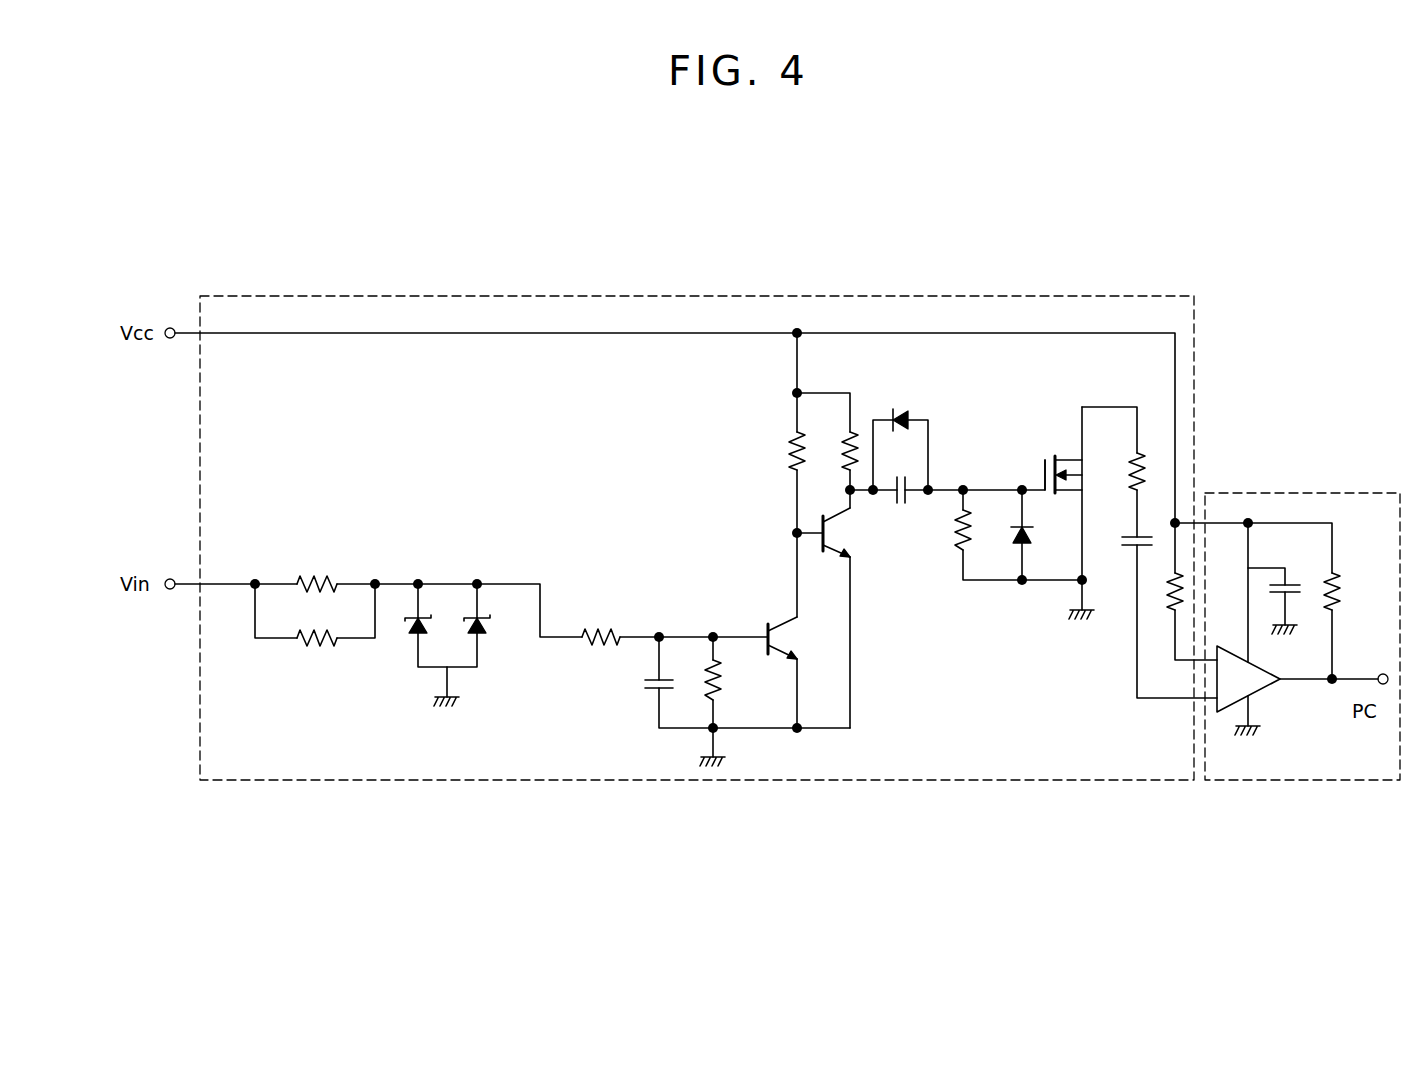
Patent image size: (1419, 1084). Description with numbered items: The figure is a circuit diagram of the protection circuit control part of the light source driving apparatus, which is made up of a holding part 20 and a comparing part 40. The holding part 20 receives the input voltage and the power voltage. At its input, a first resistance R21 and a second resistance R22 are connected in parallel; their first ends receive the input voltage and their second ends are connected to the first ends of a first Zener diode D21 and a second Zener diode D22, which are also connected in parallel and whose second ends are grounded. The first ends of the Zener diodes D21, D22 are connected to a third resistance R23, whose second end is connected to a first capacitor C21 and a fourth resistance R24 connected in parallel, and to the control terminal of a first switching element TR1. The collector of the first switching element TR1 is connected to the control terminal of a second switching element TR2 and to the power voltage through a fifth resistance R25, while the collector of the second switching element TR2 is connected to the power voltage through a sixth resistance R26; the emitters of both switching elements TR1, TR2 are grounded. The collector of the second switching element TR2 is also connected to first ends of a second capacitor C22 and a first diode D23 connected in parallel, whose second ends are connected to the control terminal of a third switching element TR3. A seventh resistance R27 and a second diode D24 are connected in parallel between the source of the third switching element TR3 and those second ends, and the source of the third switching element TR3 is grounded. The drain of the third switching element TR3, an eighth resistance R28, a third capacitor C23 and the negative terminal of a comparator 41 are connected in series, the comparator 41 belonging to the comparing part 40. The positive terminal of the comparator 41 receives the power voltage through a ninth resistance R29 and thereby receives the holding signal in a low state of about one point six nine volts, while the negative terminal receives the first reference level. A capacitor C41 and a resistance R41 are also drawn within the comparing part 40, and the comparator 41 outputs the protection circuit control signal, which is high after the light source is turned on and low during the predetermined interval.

The holding part 20 is at (698, 782).
The comparing part 40 is at (1302, 782).
The comparator 41 is at (1233, 713).
The first resistance R21 is at (317, 567).
The second resistance R22 is at (317, 657).
The first Zener diode D21 is at (402, 641).
The second Zener diode D22 is at (493, 641).
The third resistance R23 is at (601, 620).
The first capacitor C21 is at (637, 690).
The fourth resistance R24 is at (737, 680).
The first switching element TR1 is at (769, 625).
The second switching element TR2 is at (830, 545).
The fifth resistance R25 is at (773, 451).
The sixth resistance R26 is at (833, 440).
The first diode D23 is at (900, 406).
The second capacitor C22 is at (904, 478).
The seventh resistance R27 is at (937, 530).
The second diode D24 is at (1043, 537).
The third switching element TR3 is at (1048, 462).
The eighth resistance R28 is at (1118, 483).
The third capacitor C23 is at (1122, 556).
The ninth resistance R29 is at (1160, 605).
The capacitor C41 is at (1297, 574).
The resistor R41 is at (1355, 591).